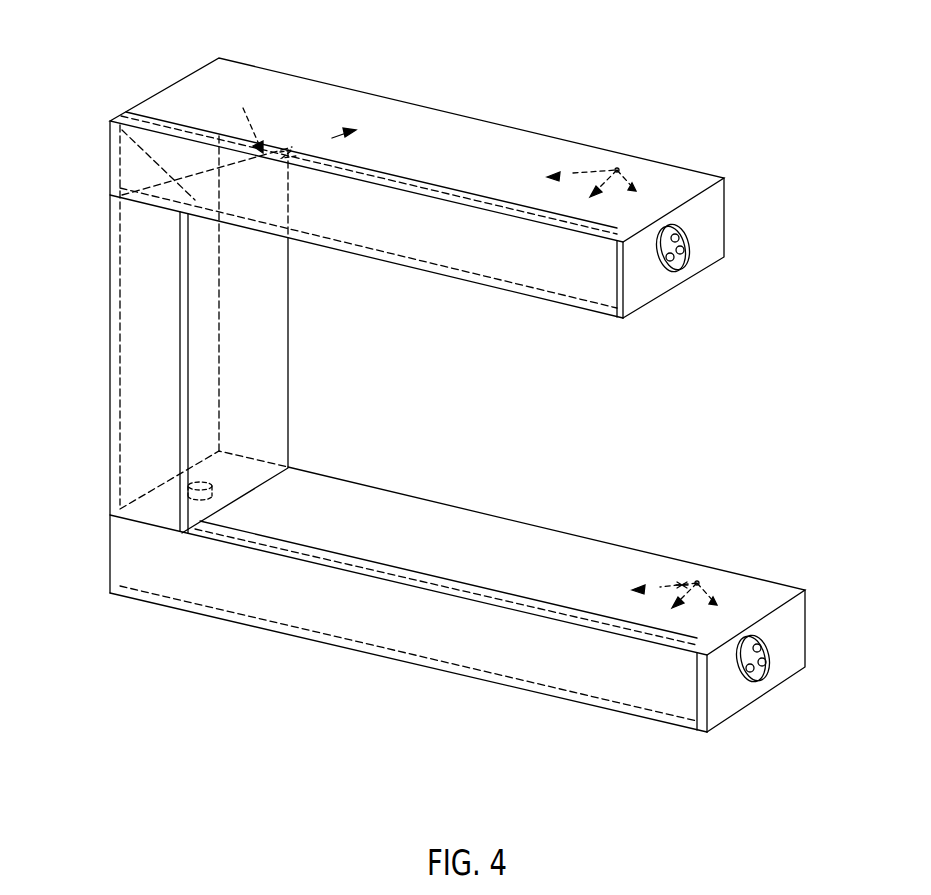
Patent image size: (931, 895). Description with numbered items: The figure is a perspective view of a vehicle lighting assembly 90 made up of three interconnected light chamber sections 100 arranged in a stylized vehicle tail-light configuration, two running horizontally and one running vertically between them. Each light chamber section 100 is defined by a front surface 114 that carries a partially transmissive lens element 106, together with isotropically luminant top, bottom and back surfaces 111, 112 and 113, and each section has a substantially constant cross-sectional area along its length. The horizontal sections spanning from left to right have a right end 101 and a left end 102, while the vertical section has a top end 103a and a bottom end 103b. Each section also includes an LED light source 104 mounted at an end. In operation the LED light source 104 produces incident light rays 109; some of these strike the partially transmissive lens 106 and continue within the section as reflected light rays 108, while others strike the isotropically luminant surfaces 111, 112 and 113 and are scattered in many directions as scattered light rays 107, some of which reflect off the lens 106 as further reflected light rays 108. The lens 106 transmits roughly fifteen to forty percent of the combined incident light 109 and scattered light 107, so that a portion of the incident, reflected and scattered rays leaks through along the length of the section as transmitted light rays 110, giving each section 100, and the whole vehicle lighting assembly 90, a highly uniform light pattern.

The vehicle lighting assembly 90 is at (657, 64).
The light chamber section 100 is at (250, 64).
The right end 101 is at (642, 275).
The left end 102 is at (185, 97).
The top end 103a is at (152, 187).
The bottom end 103b is at (243, 478).
The LED light source 104 is at (672, 262).
The partially transmissive lens element 106 is at (621, 315).
The scattered light rays 107 is at (603, 178).
The reflected light rays 108 is at (332, 138).
The incident light rays 109 is at (668, 228).
The transmitted light rays 110 is at (507, 273).
The top surface 111 is at (460, 140).
The bottom surface 112 is at (695, 258).
The back surface 113 is at (702, 205).
The front surface 114 is at (546, 268).